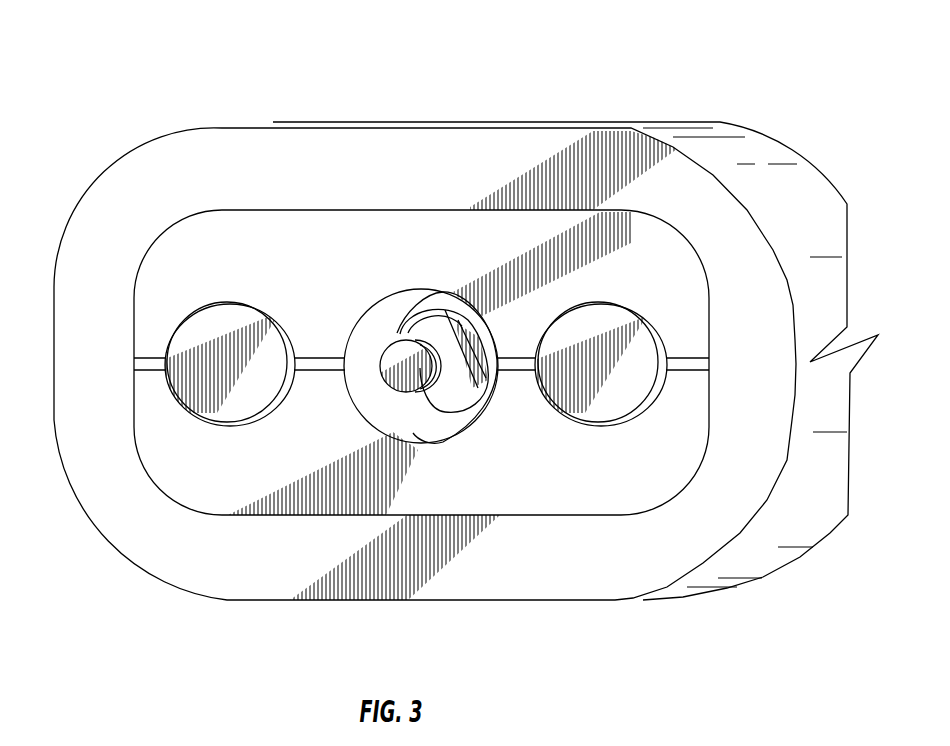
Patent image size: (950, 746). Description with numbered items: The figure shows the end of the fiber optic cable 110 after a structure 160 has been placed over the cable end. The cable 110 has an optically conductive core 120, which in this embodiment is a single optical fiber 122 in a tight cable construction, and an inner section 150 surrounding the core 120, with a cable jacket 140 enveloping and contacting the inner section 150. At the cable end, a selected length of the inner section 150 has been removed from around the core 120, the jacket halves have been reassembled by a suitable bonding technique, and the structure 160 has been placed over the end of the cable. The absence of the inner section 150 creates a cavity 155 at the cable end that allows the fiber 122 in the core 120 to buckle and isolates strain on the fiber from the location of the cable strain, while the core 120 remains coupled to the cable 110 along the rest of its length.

The fiber optic cable 110 is at (103, 140).
The optically conductive core 120 is at (449, 423).
The optical fiber 122 is at (397, 360).
The cable jacket 140 is at (483, 243).
The inner section 150 is at (410, 418).
The cavity 155 is at (508, 362).
The structure 160 is at (98, 468).